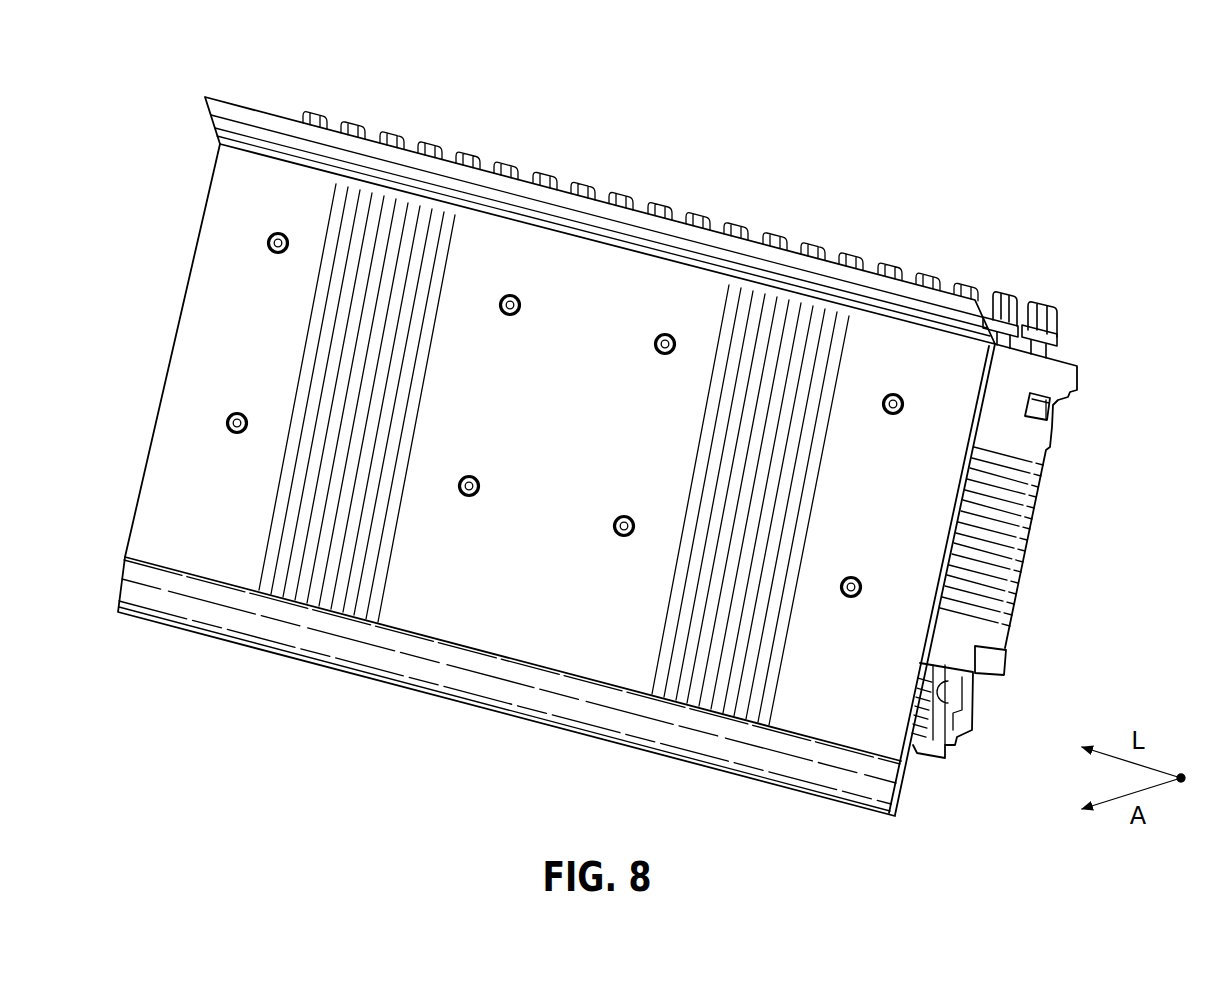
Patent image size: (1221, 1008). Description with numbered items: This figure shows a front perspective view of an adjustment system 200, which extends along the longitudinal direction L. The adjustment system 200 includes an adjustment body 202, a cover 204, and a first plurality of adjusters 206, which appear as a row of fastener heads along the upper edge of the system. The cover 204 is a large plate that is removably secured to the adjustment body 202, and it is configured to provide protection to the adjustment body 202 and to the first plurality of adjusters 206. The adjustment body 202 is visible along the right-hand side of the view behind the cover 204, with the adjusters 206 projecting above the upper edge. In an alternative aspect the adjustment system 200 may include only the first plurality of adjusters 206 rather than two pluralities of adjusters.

The adjustment system 200 is at (982, 120).
The adjustment body 202 is at (1003, 540).
The cover 204 is at (896, 647).
The first plurality of adjusters 206 is at (932, 265).